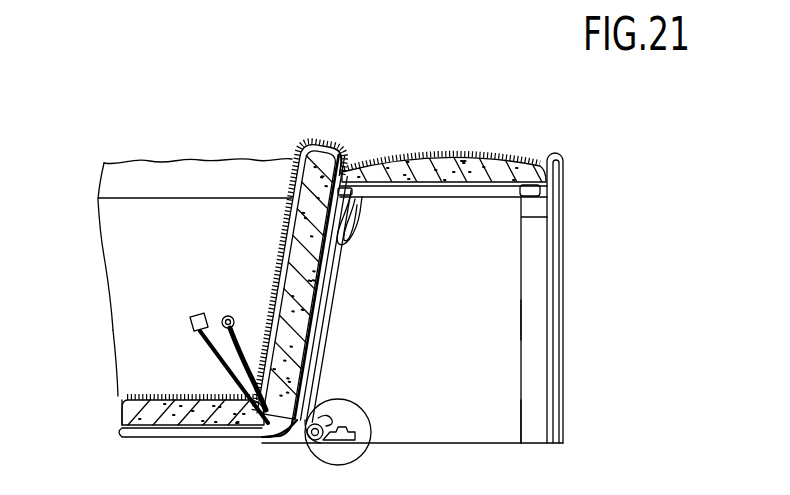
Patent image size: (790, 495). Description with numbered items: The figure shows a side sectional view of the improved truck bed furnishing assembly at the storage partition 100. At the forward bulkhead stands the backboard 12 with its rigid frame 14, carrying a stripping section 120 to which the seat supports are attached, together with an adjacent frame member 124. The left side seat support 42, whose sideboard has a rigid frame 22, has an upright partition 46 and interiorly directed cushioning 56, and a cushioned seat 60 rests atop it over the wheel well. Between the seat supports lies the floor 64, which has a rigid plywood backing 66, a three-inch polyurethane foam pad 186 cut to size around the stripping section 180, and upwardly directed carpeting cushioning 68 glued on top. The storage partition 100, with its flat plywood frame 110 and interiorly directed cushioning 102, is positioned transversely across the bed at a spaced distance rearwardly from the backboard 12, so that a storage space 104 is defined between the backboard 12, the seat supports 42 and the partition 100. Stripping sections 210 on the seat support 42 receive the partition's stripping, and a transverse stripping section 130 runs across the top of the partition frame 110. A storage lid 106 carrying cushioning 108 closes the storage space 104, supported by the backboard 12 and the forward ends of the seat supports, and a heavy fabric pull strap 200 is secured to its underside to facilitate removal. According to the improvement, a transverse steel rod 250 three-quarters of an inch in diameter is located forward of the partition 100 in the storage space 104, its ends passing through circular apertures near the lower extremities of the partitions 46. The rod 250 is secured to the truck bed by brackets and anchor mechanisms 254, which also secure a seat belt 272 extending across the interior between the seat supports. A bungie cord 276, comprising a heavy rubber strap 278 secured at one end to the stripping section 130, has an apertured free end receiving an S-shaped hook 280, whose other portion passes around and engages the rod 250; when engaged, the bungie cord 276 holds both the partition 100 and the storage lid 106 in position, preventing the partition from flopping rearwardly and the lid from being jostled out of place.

The backboard 12 is at (516, 362).
The rigid frame 14 is at (537, 284).
The rigid frame 22 is at (372, 400).
The left side seat support 42 is at (99, 270).
The upright partition 46 is at (439, 441).
The cushioning 56 is at (153, 274).
The cushioned seat 60 is at (221, 156).
The floor 64 is at (130, 359).
The rigid plywood backing 66 is at (153, 437).
The cushioning 68 is at (140, 392).
The storage partition 100 is at (266, 233).
The cushioning 102 is at (280, 266).
The storage space 104 is at (472, 317).
The storage lid 106 is at (493, 149).
The cushioning 108 is at (437, 156).
The partition frame 110 is at (306, 412).
The stripping section 120 is at (534, 404).
The cross member 124 is at (519, 204).
The transverse stripping section 130 is at (349, 156).
The stripping section 180 is at (237, 434).
The foam pad 186 is at (178, 408).
The pull strap 200 is at (365, 222).
The stripping section 210 is at (320, 345).
The transverse steel rod 250 is at (312, 441).
The anchor mechanism 254 is at (364, 428).
The seat belt 272 is at (219, 312).
The bungie cord 276 is at (338, 305).
The rubber strap 278 is at (341, 279).
The S-shaped hook 280 is at (322, 412).